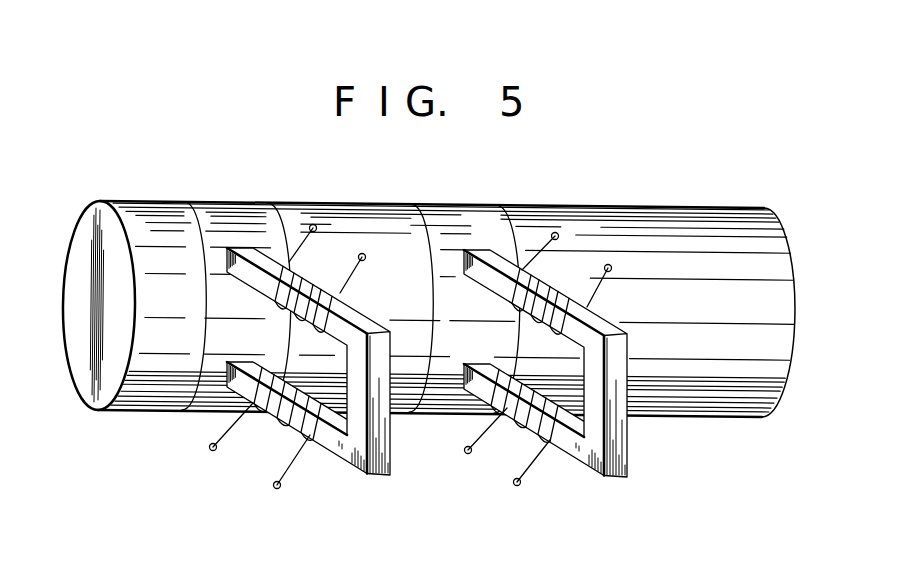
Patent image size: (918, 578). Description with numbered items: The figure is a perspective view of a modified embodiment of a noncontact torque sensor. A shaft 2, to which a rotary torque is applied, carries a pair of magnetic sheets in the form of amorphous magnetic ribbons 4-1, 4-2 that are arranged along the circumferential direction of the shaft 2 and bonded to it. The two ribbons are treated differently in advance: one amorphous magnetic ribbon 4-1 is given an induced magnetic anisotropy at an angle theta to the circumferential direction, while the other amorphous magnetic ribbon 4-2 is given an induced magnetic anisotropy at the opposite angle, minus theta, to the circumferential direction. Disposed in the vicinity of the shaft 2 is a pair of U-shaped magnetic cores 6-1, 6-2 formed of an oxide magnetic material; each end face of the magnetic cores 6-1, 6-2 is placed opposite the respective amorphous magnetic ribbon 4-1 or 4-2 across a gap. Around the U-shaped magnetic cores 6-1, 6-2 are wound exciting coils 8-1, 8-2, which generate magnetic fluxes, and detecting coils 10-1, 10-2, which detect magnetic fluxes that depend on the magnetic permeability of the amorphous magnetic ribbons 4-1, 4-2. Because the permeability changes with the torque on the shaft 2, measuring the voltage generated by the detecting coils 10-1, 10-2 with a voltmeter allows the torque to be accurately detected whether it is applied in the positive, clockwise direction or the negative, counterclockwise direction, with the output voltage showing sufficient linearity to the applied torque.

The shaft 2 is at (683, 229).
The amorphous magnetic ribbon 4-1 is at (218, 213).
The amorphous magnetic ribbon 4-2 is at (452, 221).
The U-shaped magnetic core 6-1 is at (388, 449).
The U-shaped magnetic core 6-2 is at (628, 450).
The exciting coil 8-1 is at (320, 281).
The exciting coil 8-2 is at (567, 293).
The detecting coil 10-1 is at (271, 418).
The detecting coil 10-2 is at (512, 418).